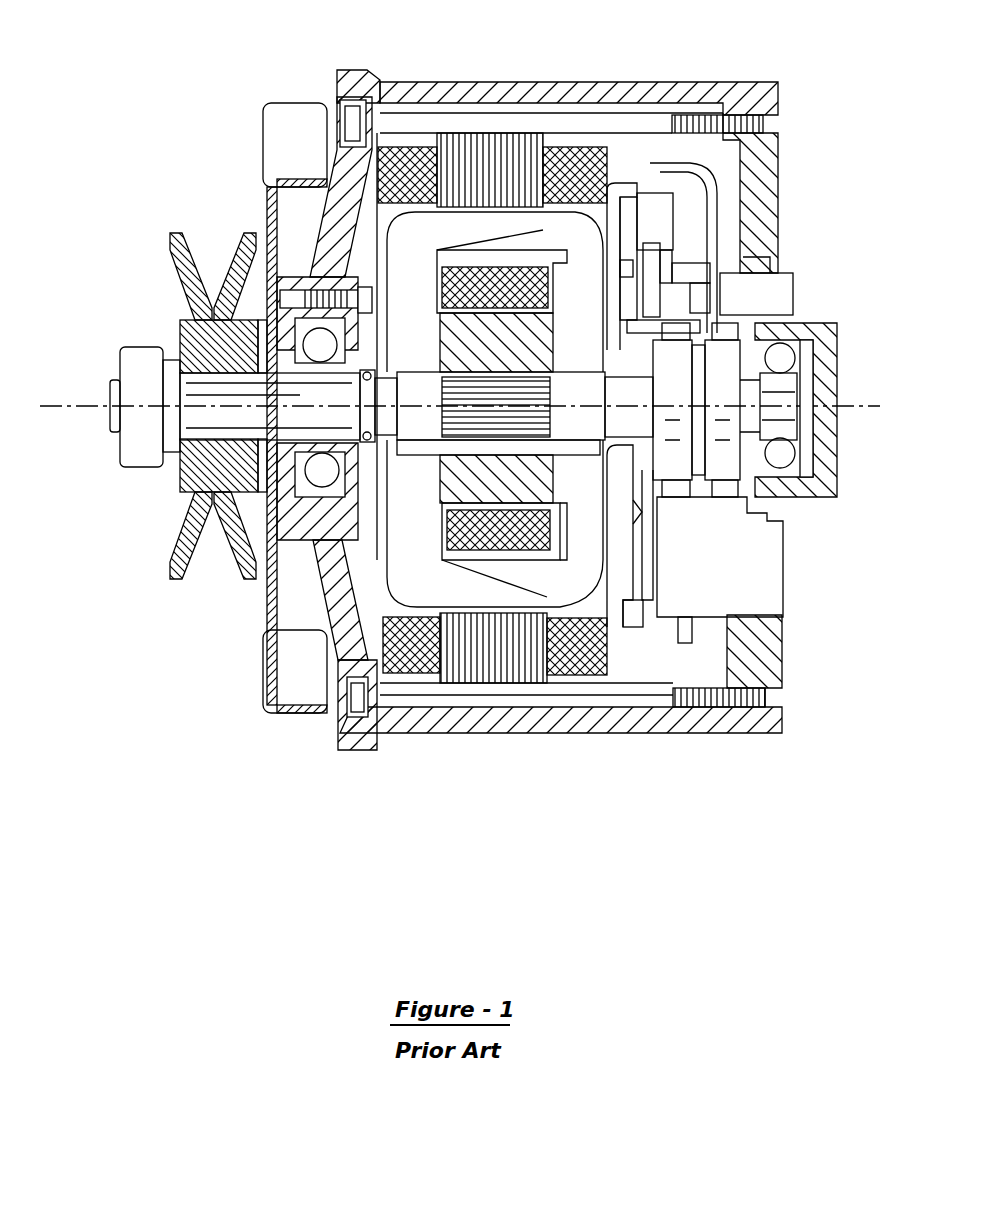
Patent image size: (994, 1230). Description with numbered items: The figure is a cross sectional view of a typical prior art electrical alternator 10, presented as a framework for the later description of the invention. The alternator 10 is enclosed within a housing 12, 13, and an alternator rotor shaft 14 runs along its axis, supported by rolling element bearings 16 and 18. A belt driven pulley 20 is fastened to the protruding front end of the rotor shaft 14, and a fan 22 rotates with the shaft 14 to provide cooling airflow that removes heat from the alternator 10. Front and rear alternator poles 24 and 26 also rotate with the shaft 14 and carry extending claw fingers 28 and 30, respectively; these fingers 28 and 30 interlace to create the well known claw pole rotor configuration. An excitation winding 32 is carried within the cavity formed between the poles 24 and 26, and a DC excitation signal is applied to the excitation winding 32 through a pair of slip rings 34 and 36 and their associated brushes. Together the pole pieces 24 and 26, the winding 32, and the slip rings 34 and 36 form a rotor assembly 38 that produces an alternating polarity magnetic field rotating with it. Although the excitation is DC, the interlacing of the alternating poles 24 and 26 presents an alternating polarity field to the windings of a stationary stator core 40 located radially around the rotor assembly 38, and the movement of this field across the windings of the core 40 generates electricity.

The electrical alternator 10 is at (478, 422).
The housing 12 is at (722, 86).
The housing 13 is at (337, 72).
The rotor shaft 14 is at (253, 418).
The rolling element bearing 16 is at (255, 580).
The rolling element bearing 18 is at (797, 343).
The belt driven pulley 20 is at (195, 253).
The fan 22 is at (290, 137).
The front alternator pole 24 is at (408, 558).
The rear alternator pole 26 is at (590, 582).
The claw fingers 28 is at (477, 593).
The claw fingers 30 is at (545, 587).
The excitation winding 32 is at (525, 265).
The slip ring 34 is at (690, 347).
The slip ring 36 is at (730, 458).
The rotor assembly 38 is at (490, 188).
The stator core 40 is at (467, 150).